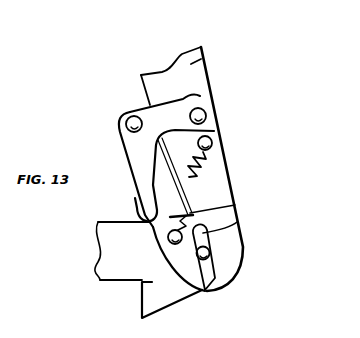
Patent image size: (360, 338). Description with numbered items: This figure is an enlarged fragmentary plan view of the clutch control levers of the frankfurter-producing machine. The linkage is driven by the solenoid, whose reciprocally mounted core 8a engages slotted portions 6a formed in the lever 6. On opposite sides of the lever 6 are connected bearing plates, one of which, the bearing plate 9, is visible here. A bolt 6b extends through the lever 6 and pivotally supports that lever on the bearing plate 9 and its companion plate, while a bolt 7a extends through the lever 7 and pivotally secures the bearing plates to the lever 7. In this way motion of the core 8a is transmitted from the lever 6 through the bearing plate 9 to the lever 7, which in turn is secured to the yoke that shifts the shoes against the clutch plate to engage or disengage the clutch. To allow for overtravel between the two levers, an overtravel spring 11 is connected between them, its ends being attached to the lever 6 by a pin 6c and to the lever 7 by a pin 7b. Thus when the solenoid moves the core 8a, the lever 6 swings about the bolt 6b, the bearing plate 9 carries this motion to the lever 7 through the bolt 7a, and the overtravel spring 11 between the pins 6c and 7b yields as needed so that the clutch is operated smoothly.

The lever 7 is at (202, 48).
The bearing plate 9 is at (186, 102).
The lever 6 is at (137, 238).
The slotted portions 6a is at (238, 218).
The bolt 6b is at (133, 120).
The pin 6c is at (142, 282).
The bolt 7a is at (213, 103).
The pin 7b is at (212, 143).
The core 8a is at (112, 232).
The overtravel spring 11 is at (200, 167).